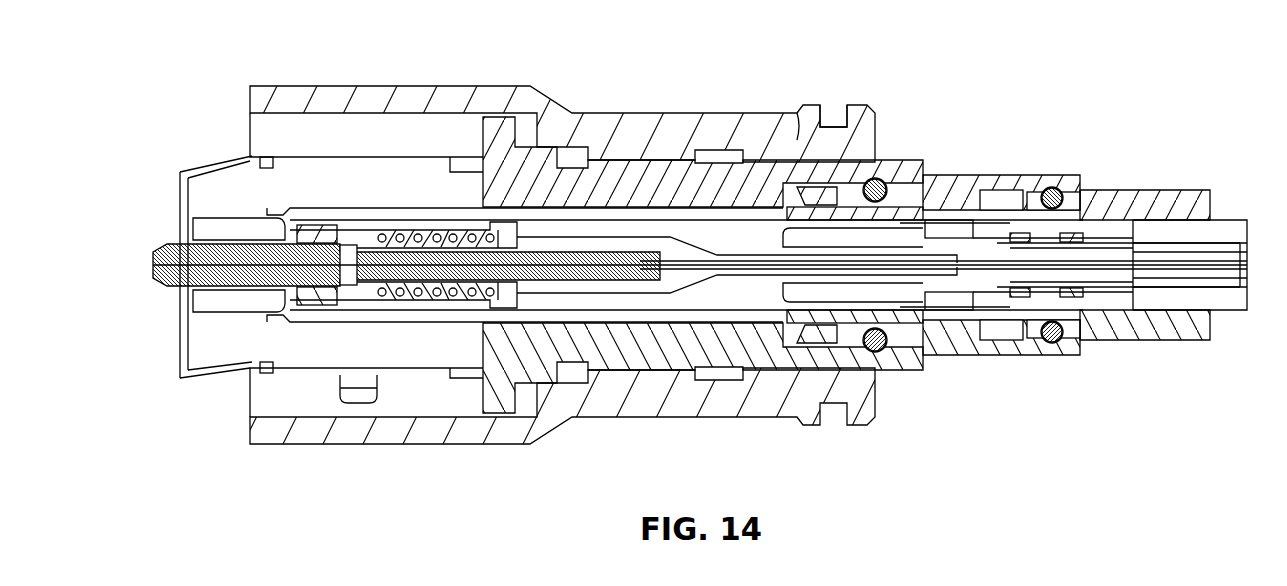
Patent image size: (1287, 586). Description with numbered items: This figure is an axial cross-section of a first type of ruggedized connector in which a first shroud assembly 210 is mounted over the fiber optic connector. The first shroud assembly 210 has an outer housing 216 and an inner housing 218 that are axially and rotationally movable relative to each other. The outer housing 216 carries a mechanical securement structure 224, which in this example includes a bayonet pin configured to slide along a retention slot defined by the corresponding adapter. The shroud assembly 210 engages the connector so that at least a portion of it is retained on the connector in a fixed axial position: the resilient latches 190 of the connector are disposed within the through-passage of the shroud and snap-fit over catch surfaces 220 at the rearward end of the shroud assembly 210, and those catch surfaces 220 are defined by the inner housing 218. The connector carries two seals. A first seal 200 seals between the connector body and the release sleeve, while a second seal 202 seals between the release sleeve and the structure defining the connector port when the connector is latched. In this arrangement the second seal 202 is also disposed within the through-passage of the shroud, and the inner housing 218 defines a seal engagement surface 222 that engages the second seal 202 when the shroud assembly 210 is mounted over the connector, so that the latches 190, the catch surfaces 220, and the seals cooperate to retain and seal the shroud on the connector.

The first shroud assembly 210 is at (409, 56).
The outer housing 216 is at (627, 117).
The inner housing 218 is at (628, 362).
The resilient latch 190 is at (800, 150).
The catch surface 220 is at (835, 170).
The second seal 202 is at (882, 180).
The seal engagement surface 222 is at (880, 352).
The first seal 200 is at (1060, 188).
The mechanical securement structure 224 is at (358, 398).